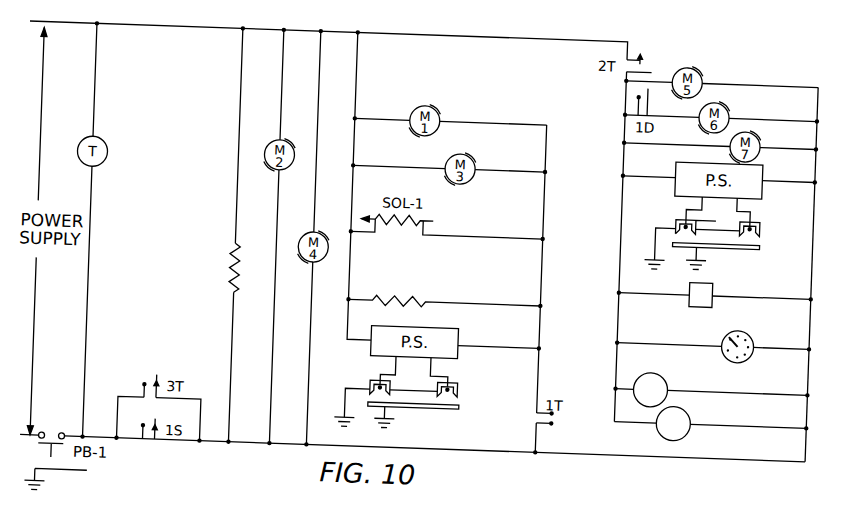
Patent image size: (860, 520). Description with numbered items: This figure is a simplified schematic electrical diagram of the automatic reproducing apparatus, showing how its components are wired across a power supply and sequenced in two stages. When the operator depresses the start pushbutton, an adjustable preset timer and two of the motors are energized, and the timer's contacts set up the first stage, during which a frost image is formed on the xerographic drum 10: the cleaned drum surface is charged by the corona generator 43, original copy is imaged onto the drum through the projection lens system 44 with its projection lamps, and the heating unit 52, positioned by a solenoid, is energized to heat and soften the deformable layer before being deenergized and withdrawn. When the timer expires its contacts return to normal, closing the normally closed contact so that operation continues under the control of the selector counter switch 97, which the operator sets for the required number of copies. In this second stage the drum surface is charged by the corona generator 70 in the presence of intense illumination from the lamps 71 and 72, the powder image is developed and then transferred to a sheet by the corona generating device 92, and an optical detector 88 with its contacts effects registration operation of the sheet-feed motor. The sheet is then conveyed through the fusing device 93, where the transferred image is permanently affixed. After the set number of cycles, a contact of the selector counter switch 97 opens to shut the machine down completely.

The drum 10 is at (452, 399).
The corona generator 43 is at (385, 368).
The projection lens system 44 is at (467, 370).
The heating unit 52 is at (412, 282).
The corona generator 70 is at (685, 198).
The corona generating device 92 is at (762, 198).
The optical detector 88 is at (722, 268).
The selector counter switch 97 is at (759, 312).
The lamp 71 is at (675, 358).
The lamp 72 is at (700, 393).
The fusing device 93 is at (238, 259).